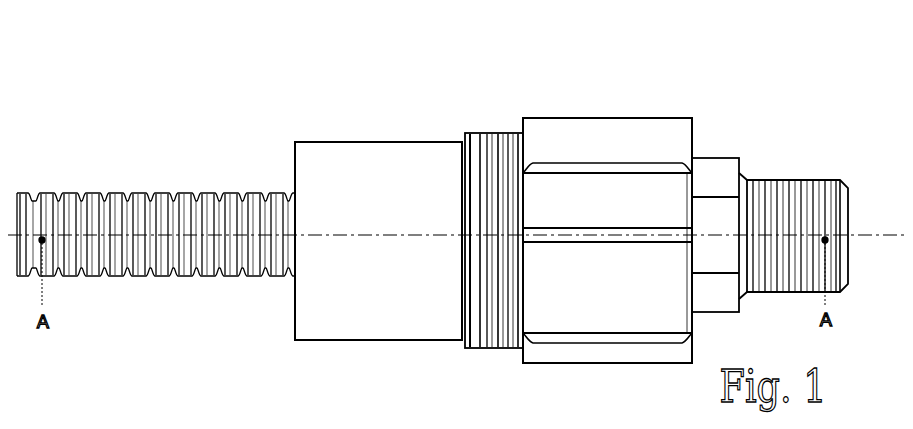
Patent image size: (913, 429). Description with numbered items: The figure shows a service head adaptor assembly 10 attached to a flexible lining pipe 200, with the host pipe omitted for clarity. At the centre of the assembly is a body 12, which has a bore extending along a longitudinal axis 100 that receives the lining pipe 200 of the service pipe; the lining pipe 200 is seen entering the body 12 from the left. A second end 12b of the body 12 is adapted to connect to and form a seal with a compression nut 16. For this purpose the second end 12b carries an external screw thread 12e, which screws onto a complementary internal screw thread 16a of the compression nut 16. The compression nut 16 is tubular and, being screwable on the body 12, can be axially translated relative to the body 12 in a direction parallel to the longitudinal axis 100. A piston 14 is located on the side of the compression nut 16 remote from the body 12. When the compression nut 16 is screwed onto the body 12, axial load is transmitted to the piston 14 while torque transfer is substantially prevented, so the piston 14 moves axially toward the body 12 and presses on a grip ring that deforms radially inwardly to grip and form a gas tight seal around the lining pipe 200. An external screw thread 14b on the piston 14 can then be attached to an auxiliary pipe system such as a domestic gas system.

The service head adaptor assembly 10 is at (688, 64).
The body 12 is at (357, 151).
The external screw thread 12e is at (483, 147).
The second end 12b is at (506, 423).
The piston 14 is at (722, 176).
The external screw thread 14b is at (797, 179).
The compression nut 16 is at (584, 141).
The internal screw thread 16a is at (575, 423).
The longitudinal axis 100 is at (868, 231).
The lining pipe 200 is at (163, 220).